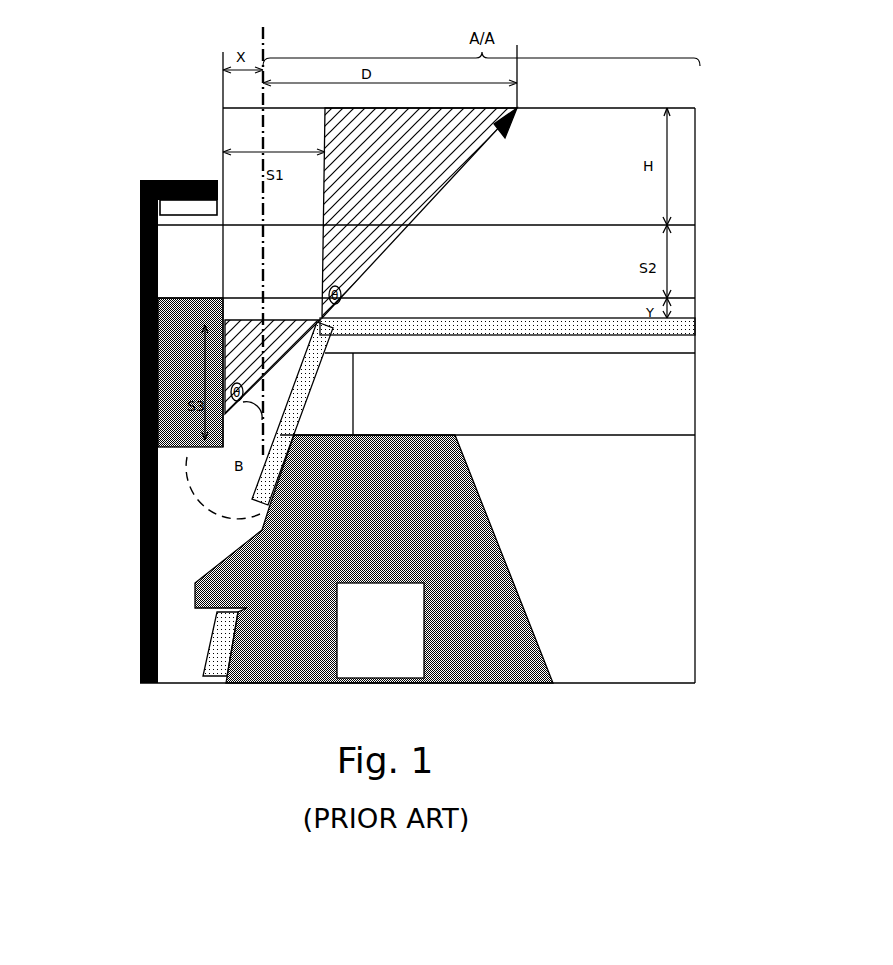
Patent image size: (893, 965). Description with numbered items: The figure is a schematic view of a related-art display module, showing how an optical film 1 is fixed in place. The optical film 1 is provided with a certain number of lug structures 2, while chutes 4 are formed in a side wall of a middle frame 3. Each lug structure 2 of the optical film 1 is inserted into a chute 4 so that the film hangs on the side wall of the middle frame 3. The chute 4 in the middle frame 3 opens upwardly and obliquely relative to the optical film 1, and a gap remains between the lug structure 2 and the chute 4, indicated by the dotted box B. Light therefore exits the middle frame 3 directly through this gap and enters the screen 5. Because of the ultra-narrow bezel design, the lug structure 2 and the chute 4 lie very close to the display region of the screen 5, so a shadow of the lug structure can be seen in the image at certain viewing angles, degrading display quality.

The optical film 1 is at (678, 330).
The lug structure 2 is at (210, 657).
The middle frame 3 is at (480, 612).
The chute 4 is at (225, 535).
The screen 5 is at (675, 253).